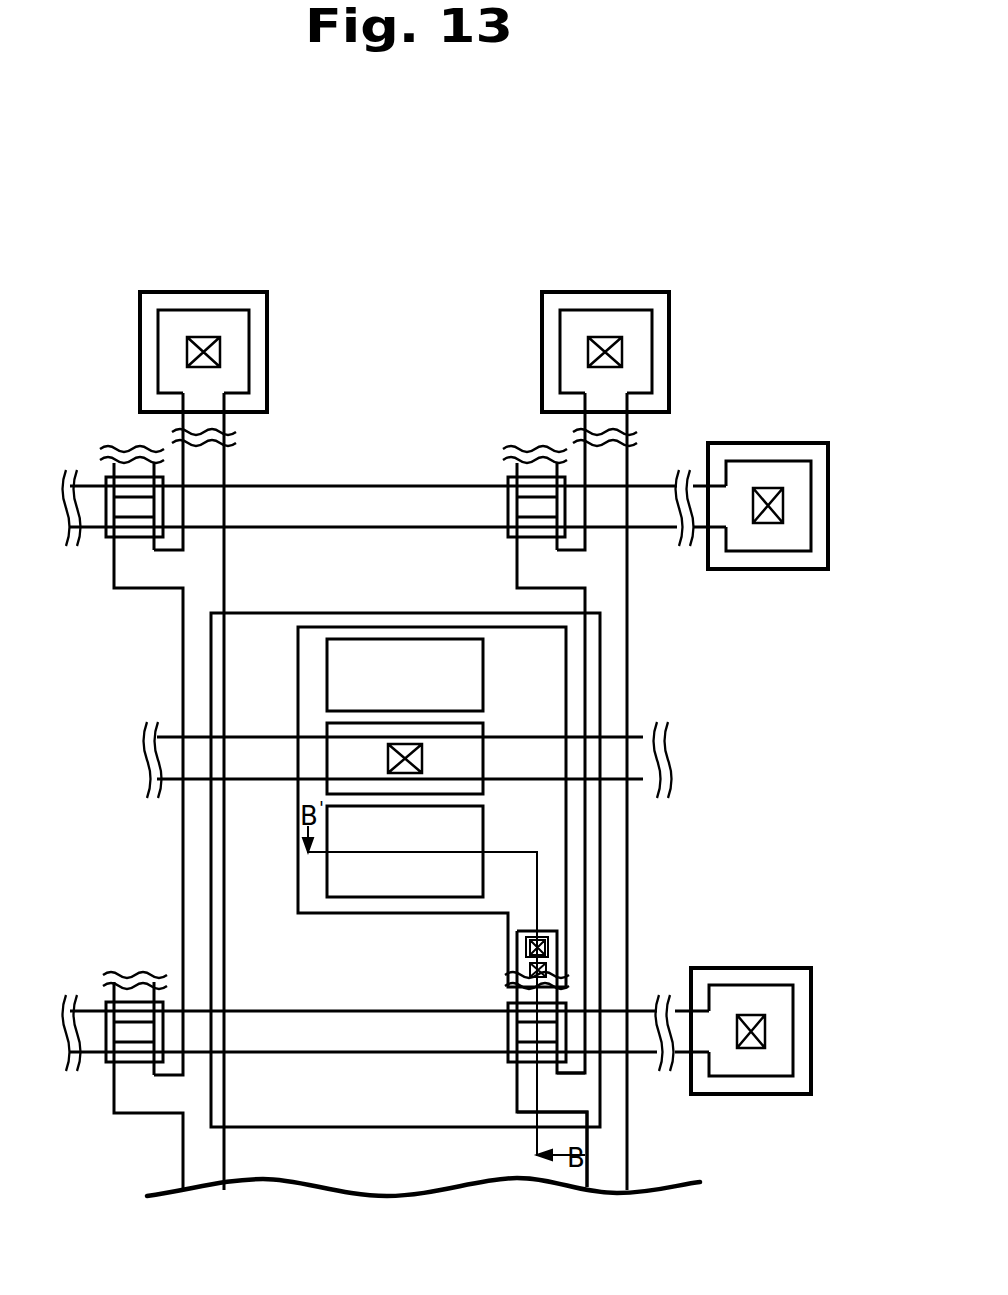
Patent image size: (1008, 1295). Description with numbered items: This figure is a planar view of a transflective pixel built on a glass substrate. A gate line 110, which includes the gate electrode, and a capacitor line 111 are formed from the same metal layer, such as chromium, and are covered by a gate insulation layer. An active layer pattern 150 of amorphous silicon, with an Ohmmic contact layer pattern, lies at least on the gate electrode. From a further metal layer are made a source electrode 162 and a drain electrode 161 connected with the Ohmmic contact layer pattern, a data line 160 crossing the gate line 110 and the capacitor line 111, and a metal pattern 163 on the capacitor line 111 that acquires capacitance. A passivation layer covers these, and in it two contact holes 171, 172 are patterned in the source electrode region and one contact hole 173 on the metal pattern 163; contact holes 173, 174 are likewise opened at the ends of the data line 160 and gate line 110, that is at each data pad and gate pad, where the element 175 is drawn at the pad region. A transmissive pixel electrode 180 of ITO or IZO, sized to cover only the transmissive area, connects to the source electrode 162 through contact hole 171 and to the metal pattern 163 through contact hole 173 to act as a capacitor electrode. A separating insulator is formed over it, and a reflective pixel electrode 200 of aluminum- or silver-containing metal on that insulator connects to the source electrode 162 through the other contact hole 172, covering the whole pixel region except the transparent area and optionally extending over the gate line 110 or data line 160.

The gate line 110 is at (655, 496).
The capacitor line 111 is at (643, 757).
The active layer pattern 150 is at (512, 1063).
The data line 160 is at (613, 870).
The drain electrode 161 is at (567, 1093).
The source electrode 162 is at (557, 995).
The metal pattern 163 is at (483, 728).
The contact hole 171 is at (548, 970).
The contact hole 172 is at (548, 947).
The contact hole 173 is at (422, 758).
The contact hole 174 is at (200, 337).
The gate pad 175 is at (783, 505).
The transmissive pixel electrode 180 is at (567, 838).
The reflective pixel electrode 200 is at (403, 612).